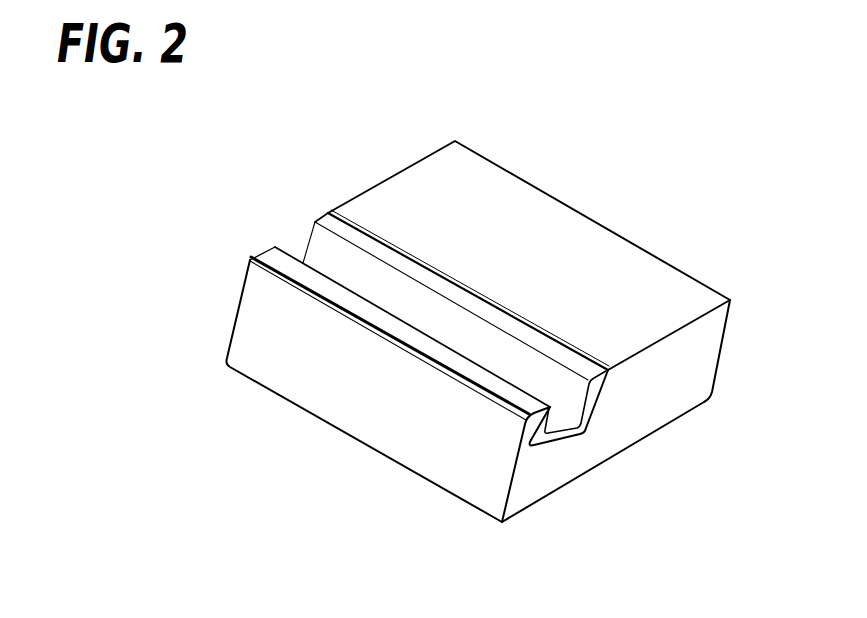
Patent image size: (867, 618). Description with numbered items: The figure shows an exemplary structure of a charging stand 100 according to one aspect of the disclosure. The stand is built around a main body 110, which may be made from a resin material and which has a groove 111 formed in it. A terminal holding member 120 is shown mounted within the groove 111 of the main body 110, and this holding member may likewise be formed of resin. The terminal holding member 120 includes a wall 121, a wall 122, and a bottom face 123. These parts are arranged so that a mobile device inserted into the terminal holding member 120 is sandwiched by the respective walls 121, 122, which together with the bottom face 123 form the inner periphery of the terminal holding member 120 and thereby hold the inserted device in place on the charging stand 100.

The charging stand 100 is at (681, 420).
The main body 110 is at (662, 290).
The groove 111 is at (530, 453).
The terminal holding member 120 is at (360, 240).
The wall 121 is at (315, 243).
The wall 122 is at (292, 253).
The bottom face 123 is at (557, 423).